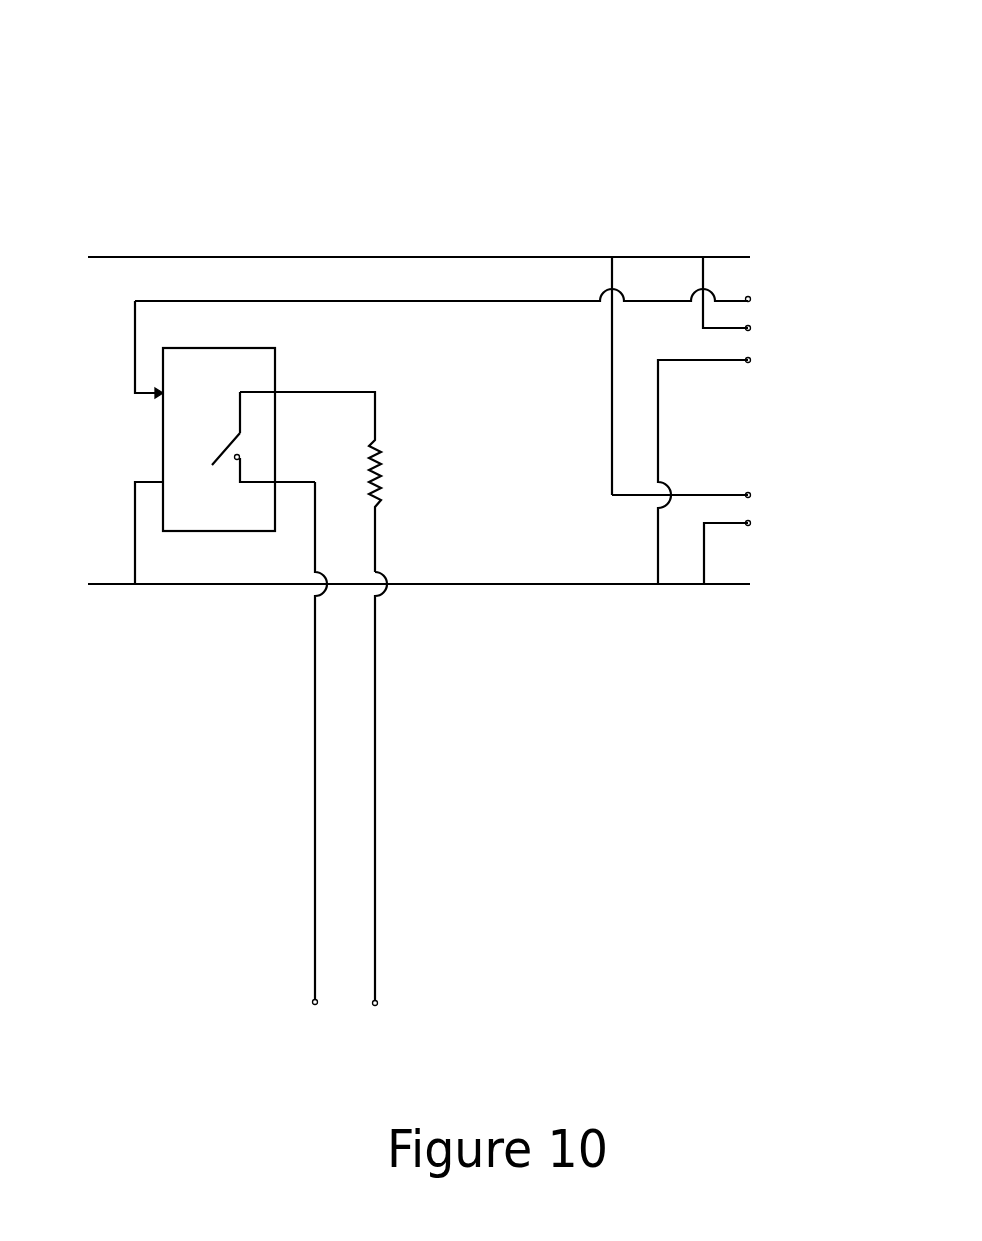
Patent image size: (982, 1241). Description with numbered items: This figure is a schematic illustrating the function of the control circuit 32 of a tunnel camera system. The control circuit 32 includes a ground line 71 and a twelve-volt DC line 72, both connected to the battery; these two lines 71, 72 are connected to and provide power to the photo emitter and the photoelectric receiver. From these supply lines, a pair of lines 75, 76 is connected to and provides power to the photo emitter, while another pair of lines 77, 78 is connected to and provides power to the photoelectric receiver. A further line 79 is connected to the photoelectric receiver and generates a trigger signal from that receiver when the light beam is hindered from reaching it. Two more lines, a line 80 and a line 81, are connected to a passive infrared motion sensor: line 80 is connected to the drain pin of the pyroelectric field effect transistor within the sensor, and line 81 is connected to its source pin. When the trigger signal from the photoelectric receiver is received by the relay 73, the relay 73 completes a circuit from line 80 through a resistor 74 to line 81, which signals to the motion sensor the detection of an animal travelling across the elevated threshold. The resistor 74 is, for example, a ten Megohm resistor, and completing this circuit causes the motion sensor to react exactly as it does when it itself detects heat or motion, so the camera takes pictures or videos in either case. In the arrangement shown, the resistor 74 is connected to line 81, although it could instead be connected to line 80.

The control circuit 32 is at (580, 152).
The ground line 71 is at (208, 588).
The twelve-volt DC line 72 is at (192, 237).
The relay 73 is at (274, 362).
The resistor 74 is at (382, 478).
The line 75 is at (751, 525).
The line 76 is at (751, 493).
The line 77 is at (751, 359).
The line 78 is at (751, 326).
The line 79 is at (751, 297).
The line 80 is at (313, 921).
The line 81 is at (377, 965).